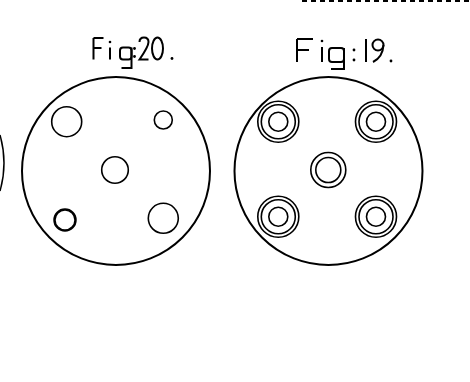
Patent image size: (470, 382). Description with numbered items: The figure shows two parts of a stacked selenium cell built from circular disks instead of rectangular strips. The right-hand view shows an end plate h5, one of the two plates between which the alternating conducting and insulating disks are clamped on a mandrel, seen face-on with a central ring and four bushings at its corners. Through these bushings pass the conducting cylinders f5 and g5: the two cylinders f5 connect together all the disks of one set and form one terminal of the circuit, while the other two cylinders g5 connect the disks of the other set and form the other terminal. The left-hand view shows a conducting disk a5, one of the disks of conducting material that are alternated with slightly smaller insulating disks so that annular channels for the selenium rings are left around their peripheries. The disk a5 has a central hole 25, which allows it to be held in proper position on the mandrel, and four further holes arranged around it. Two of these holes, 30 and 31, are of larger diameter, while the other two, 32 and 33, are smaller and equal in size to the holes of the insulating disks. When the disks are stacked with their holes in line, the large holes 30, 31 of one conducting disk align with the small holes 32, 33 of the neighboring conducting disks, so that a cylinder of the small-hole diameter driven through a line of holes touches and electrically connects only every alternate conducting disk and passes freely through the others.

In FIG. 20, the conducting disk a5 is at (116, 171).
In FIG. 20, the large hole 30 is at (67, 122).
In FIG. 20, the small hole 32 is at (170, 127).
In FIG. 20, the central hole 25 is at (128, 169).
In FIG. 20, the small hole 33 is at (65, 220).
In FIG. 20, the large hole 31 is at (167, 217).
In FIG. 19, the end plate h5 is at (348, 170).
In FIG. 19, the conducting cylinder f5 is at (299, 112).
In FIG. 19, the conducting cylinder g5 is at (299, 218).